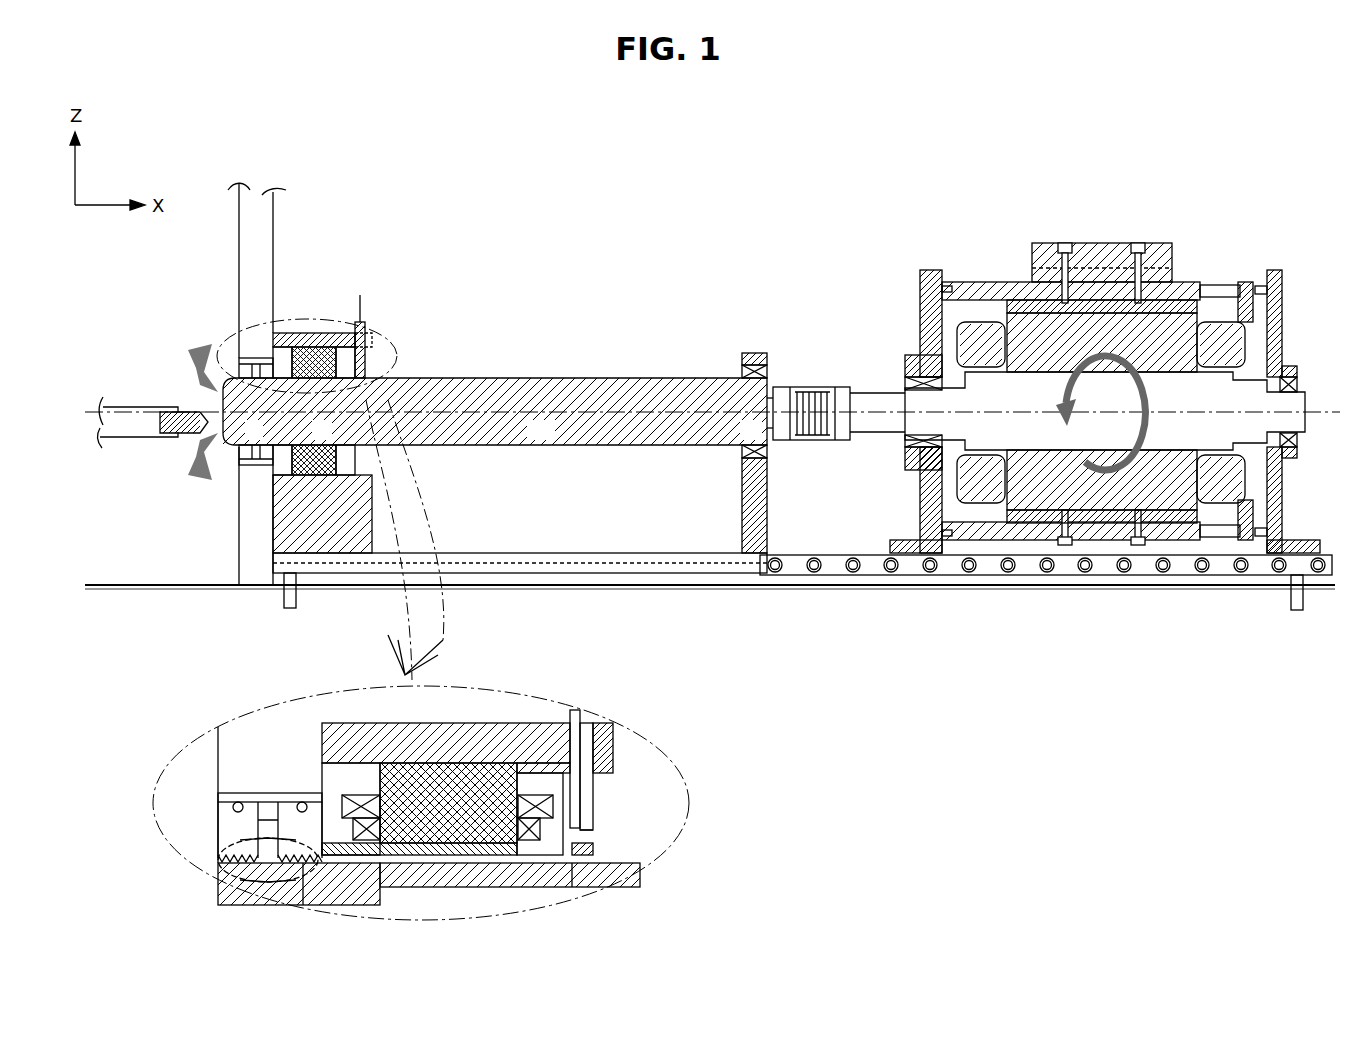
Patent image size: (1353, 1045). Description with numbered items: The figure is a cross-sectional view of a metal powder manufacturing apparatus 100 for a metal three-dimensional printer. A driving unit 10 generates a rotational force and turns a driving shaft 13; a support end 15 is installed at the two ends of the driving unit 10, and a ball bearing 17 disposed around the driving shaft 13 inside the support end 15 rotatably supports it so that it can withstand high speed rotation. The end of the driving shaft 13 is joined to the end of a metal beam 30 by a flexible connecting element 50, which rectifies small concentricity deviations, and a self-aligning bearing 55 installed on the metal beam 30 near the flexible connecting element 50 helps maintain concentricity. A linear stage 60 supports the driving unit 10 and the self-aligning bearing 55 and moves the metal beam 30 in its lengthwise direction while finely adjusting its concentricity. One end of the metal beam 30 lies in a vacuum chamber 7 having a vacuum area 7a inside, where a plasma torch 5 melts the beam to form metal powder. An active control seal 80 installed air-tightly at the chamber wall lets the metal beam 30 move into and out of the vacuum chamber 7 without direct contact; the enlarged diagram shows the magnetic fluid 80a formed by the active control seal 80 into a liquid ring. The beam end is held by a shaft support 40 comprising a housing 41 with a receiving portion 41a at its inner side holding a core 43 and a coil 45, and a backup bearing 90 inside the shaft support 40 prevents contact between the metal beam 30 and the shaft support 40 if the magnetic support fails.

The metal powder manufacturing apparatus 100 is at (1205, 118).
The driving unit 10 is at (1190, 250).
The support end 15 is at (930, 268).
The ball bearing 17 is at (915, 365).
The driving shaft 13 is at (880, 398).
The flexible connecting element 50 is at (810, 387).
The self-aligning bearing 55 is at (745, 355).
The metal beam 30 is at (490, 378).
The linear stage 60 is at (808, 553).
The plasma torch 5 is at (125, 405).
The active control seal 80 is at (240, 455).
The magnetic fluid 80a is at (222, 855).
The vacuum area 7a is at (190, 250).
The vacuum chamber 7 is at (272, 232).
The core 43 is at (308, 347).
The coil 45 is at (308, 340).
The shaft support 40 is at (320, 325).
The housing 41 is at (345, 333).
The receiving portion 41a is at (400, 778).
The backup bearing 90 is at (495, 857).